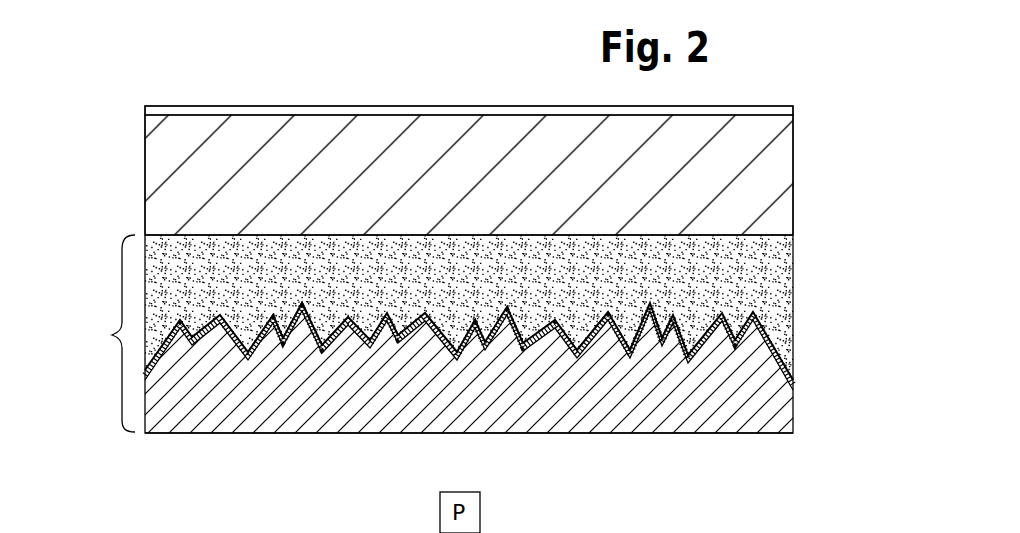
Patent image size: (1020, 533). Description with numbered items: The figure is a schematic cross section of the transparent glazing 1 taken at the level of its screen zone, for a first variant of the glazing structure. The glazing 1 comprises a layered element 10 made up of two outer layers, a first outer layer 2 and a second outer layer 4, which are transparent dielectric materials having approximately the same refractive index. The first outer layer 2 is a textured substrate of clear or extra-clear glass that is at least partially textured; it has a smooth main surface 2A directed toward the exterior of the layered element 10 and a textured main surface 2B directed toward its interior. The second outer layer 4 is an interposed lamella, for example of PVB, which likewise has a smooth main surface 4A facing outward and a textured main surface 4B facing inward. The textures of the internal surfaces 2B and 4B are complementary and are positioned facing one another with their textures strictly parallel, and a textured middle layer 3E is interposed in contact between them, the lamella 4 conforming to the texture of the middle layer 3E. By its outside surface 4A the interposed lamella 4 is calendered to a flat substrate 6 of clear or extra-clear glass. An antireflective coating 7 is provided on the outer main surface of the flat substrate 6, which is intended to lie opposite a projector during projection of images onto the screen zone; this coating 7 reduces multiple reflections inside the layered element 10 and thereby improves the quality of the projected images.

The transparent glazing 1 is at (193, 97).
The layered element 10 is at (81, 333).
The antireflective coating 7 is at (787, 112).
The flat substrate 6 is at (777, 157).
The smooth main surface of the second outer layer 4A is at (757, 233).
The second outer layer 4 is at (770, 276).
The textured main surface of the first outer layer 2B is at (795, 323).
The textured middle layer 3E is at (795, 364).
The textured main surface of the second outer layer 4B is at (753, 398).
The first outer layer 2 is at (772, 405).
The smooth main surface of the first outer layer 2A is at (740, 434).